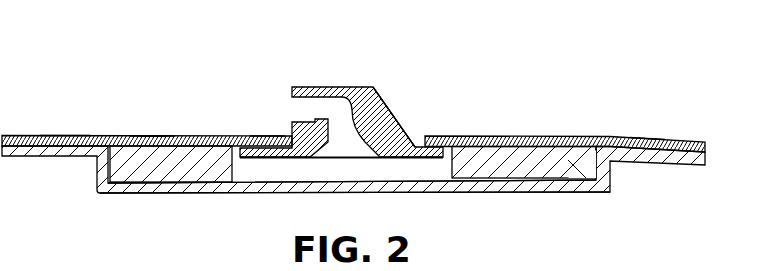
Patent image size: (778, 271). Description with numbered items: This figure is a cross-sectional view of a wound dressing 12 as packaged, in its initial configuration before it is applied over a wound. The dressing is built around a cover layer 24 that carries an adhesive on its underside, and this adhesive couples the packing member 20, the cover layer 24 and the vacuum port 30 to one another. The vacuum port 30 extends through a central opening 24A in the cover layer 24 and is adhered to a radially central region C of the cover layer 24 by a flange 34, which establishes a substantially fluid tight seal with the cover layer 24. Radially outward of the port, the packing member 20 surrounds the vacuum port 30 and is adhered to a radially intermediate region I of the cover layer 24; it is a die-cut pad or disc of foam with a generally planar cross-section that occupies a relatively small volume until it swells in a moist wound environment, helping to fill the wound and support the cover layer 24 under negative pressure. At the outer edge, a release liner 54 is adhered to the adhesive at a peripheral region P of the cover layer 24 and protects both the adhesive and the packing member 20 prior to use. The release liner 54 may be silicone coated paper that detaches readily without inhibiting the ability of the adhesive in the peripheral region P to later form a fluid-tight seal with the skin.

The wound dressing 12 is at (490, 52).
The packing member 20 is at (557, 165).
The cover layer 24 is at (522, 137).
The central opening 24A is at (418, 128).
The vacuum port 30 is at (357, 88).
The flange 34 is at (432, 158).
The release liner 54 is at (572, 190).
The peripheral region P is at (62, 115).
The radially intermediate region I is at (155, 105).
The radially central region C is at (413, 93).